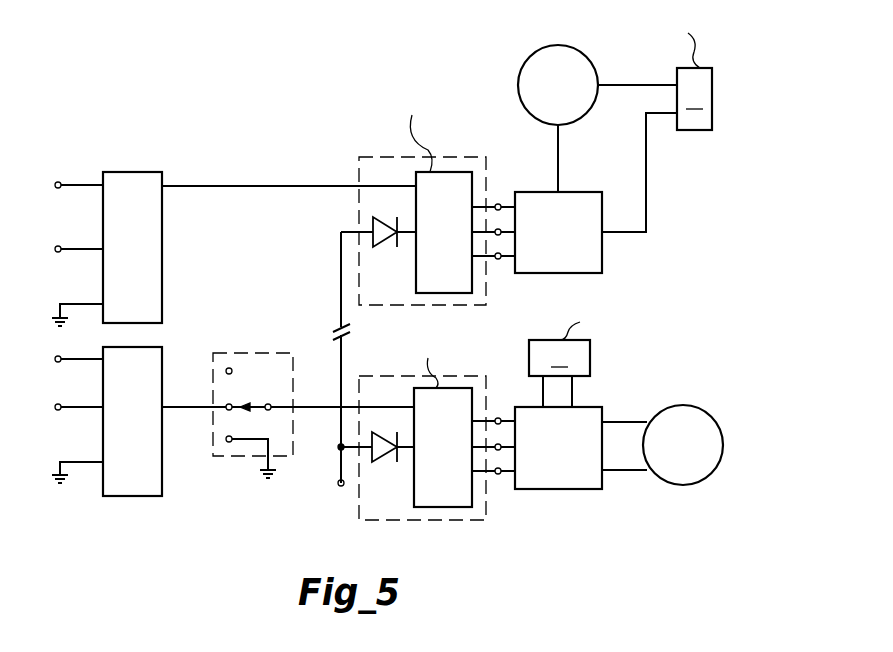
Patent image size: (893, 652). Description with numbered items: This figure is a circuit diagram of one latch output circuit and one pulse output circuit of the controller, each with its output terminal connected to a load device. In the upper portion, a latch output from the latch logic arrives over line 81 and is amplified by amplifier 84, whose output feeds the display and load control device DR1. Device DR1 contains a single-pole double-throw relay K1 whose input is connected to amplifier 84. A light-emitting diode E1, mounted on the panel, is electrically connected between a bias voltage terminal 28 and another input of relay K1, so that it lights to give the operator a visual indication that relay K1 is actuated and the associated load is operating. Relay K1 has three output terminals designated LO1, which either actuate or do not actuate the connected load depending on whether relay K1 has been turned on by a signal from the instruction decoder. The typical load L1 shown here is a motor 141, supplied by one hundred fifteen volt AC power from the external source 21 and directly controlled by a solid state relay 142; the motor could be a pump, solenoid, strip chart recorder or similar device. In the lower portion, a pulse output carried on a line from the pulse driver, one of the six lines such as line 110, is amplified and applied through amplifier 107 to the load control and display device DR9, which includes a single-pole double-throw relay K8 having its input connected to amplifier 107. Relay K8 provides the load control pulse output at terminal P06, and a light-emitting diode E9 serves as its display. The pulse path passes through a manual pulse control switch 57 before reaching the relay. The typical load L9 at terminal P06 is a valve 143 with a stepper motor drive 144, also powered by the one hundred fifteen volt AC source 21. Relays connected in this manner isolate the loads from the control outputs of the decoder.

The latch output line 81 is at (60, 182).
The amplifier 84 is at (138, 172).
The bias voltage terminal 28 is at (60, 246).
The pulse output line amplifier 107 is at (133, 497).
The pulse output line 110 is at (60, 411).
The mode selector switch 57 is at (225, 457).
The display-relay DR1 is at (370, 152).
The single-pole double-throw relay K1 is at (443, 172).
The light-emitting diode E1 is at (378, 240).
The latch output terminal LO1 is at (497, 205).
The motor 141 is at (519, 81).
The solid state relay 142 is at (580, 192).
The AC electric power source 21 is at (641, 196).
The load L1 is at (658, 196).
The display-relay DR9 is at (364, 520).
The single-pole double-throw relay K8 is at (447, 507).
The diode E9 is at (373, 462).
The pulse output terminal P06 is at (498, 476).
The stepper motor drive 144 is at (588, 489).
The load L9 is at (632, 380).
The valve 143 is at (720, 402).